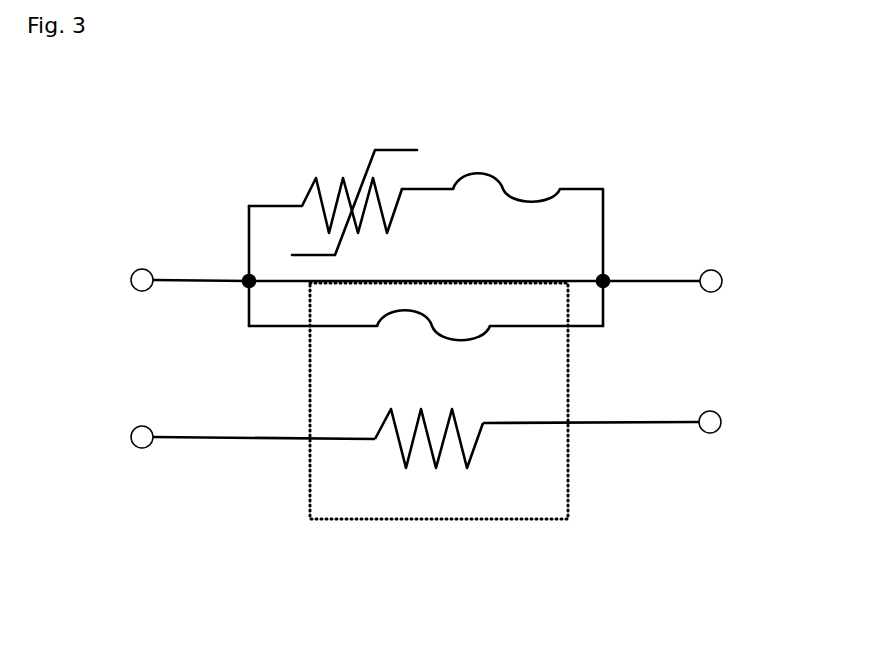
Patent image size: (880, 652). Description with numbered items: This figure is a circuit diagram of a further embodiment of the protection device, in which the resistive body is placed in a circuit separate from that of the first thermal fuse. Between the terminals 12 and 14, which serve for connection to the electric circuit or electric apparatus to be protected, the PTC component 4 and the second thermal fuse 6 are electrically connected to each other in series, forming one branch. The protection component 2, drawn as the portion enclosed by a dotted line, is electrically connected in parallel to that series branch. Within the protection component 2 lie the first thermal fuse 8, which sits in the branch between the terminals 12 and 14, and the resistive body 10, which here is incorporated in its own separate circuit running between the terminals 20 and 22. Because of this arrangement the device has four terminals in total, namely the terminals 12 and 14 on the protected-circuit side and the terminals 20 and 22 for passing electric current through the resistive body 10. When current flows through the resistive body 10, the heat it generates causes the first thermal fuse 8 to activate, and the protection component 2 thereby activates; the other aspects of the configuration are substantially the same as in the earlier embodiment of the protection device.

The protection component 2 is at (451, 401).
The PTC component 4 is at (333, 183).
The second thermal fuse 6 is at (506, 169).
The first thermal fuse 8 is at (433, 336).
The resistive body 10 is at (417, 443).
The terminal 12 is at (683, 280).
The terminal 14 is at (168, 279).
The terminal 20 is at (622, 423).
The terminal 22 is at (230, 438).